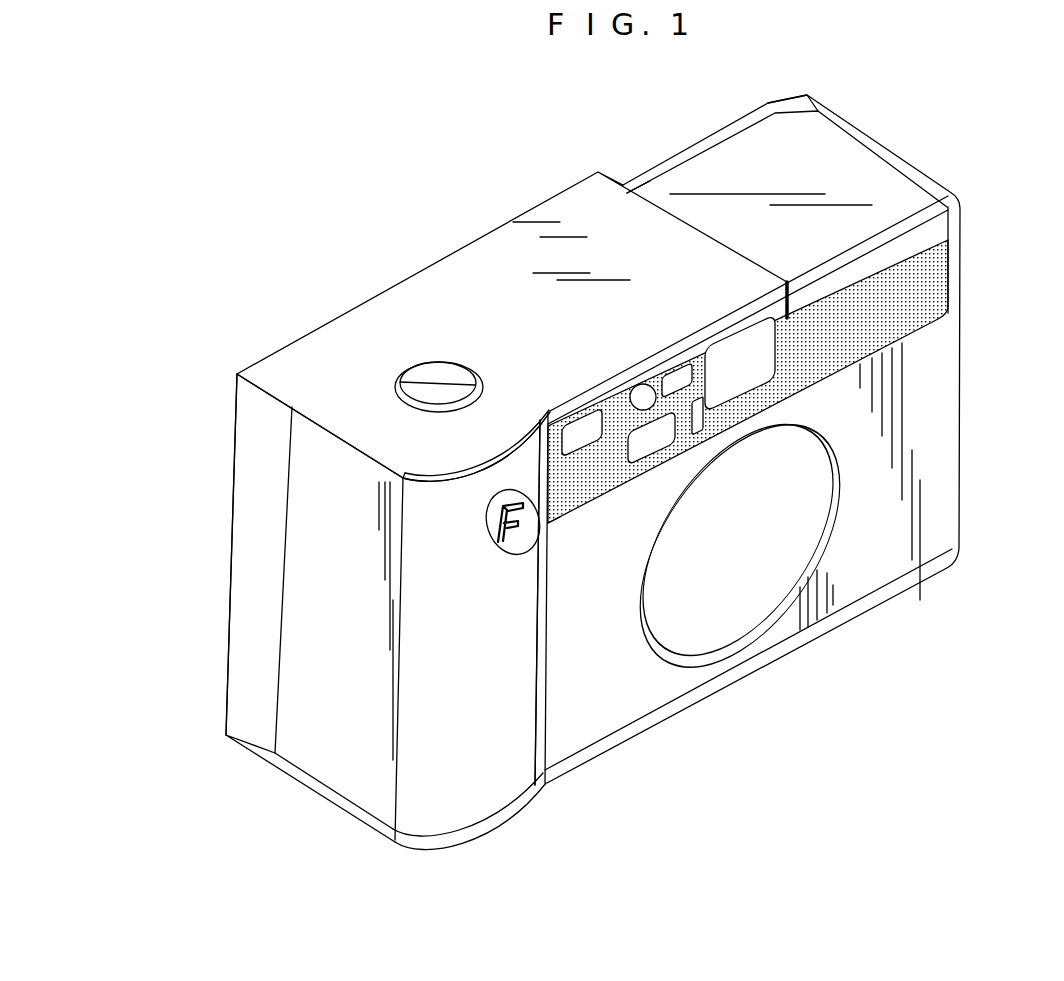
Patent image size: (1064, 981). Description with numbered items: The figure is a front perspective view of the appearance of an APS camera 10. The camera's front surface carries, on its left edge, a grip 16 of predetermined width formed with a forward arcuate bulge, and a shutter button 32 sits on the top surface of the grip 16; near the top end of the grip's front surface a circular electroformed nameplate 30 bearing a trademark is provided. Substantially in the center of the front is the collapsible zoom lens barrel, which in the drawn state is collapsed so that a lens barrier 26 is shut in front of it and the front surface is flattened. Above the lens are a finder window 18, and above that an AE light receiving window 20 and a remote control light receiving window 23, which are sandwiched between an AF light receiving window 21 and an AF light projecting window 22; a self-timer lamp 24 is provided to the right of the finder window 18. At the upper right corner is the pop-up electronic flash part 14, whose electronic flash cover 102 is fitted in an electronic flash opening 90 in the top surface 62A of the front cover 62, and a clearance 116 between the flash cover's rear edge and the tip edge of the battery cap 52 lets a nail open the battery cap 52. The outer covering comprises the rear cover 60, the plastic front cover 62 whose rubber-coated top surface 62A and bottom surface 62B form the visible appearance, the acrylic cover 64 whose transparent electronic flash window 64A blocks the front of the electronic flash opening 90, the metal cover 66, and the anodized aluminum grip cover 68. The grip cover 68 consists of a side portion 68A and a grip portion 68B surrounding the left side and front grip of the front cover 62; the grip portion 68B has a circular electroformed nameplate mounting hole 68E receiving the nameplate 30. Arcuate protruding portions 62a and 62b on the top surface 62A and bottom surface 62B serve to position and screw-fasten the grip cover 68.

The camera 10 is at (400, 147).
The electronic flash part 14 is at (898, 197).
The grip 16 is at (545, 785).
The finder window 18 is at (648, 443).
The AE light receiving window 20 is at (641, 382).
The AF light receiving window 21 is at (560, 420).
The AF light projecting window 22 is at (730, 347).
The remote control light receiving window 23 is at (673, 371).
The self-timer lamp 24 is at (697, 435).
The lens barrier 26 is at (728, 623).
The electroformed nameplate 30 is at (515, 547).
The shutter button 32 is at (428, 377).
The battery cap 52 is at (690, 168).
The rear cover 60 is at (295, 362).
The front cover 62 is at (538, 310).
The top surface 62A is at (342, 380).
The bottom surface 62B is at (680, 705).
The protruding portion 62a is at (466, 461).
The protruding portion 62b is at (468, 842).
The acrylic cover 64 is at (940, 300).
The electronic flash window 64A is at (942, 232).
The metal cover 66 is at (935, 438).
The grip cover 68 is at (342, 765).
The side portion 68A is at (322, 672).
The grip portion 68B is at (490, 790).
The electroformed nameplate mounting hole 68E is at (497, 528).
The electronic flash opening 90 is at (727, 236).
The electronic flash cover 102 is at (845, 177).
The clearance 116 is at (752, 148).